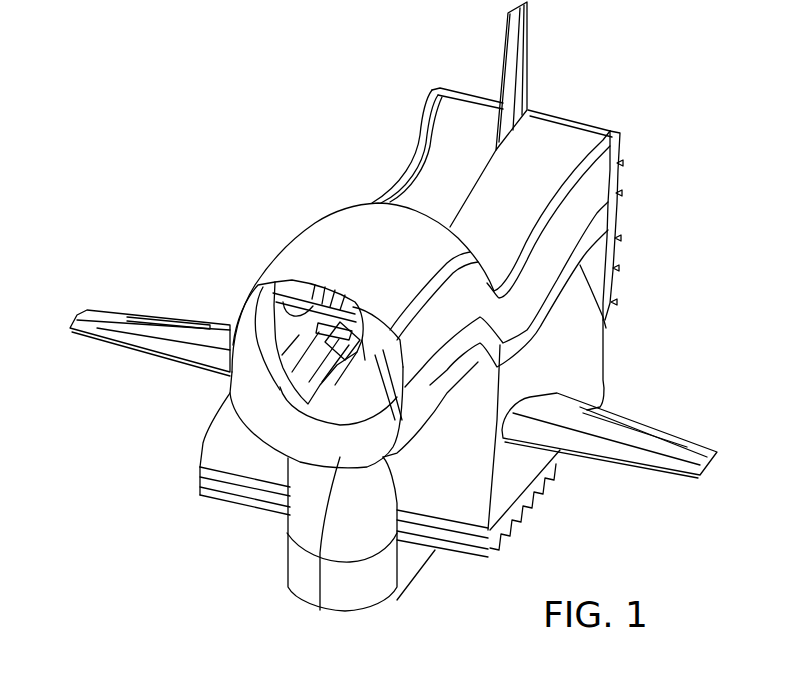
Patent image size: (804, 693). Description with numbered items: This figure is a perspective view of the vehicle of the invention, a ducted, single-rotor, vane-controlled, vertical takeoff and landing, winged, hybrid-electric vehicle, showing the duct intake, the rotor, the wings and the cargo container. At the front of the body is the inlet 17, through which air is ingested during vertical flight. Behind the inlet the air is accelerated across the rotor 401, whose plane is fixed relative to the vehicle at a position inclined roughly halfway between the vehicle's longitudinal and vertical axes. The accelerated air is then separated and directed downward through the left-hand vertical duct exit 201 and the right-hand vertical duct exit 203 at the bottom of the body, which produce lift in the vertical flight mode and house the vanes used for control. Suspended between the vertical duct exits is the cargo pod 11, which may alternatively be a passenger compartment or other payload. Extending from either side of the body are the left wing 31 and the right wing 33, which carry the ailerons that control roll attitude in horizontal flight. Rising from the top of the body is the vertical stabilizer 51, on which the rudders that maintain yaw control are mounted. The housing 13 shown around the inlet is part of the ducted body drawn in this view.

The cargo pod 11 is at (310, 590).
The cylindrical housing 13 is at (227, 437).
The inlet 17 is at (274, 281).
The left wing 31 is at (700, 457).
The right wing 33 is at (97, 328).
The vertical stabilizer 51 is at (513, 32).
The left-hand vertical duct exit 201 is at (555, 509).
The right-hand vertical duct exit 203 is at (192, 490).
The rotor 401 is at (360, 367).